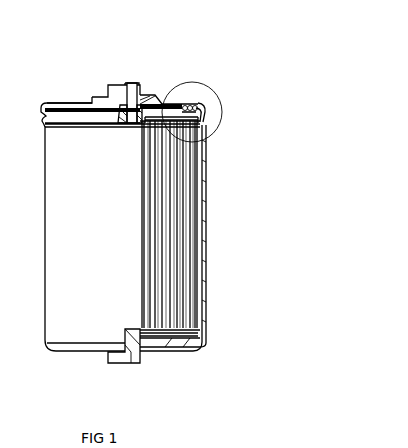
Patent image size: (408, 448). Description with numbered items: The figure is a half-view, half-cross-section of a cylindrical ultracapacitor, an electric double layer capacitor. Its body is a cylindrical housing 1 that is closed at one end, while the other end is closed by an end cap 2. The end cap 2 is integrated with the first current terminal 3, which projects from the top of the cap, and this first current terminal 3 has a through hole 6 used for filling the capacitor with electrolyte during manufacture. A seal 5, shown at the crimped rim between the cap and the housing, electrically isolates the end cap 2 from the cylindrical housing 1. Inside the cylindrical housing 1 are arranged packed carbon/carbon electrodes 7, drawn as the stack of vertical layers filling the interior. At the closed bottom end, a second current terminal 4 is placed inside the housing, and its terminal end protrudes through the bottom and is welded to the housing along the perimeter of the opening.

The cylindrical housing 1 is at (205, 280).
The end cap 2 is at (150, 102).
The first current terminal 3 is at (134, 88).
The second current terminal 4 is at (130, 352).
The seal 5 is at (188, 105).
The through hole 6 is at (120, 108).
The packed carbon/carbon electrodes 7 is at (188, 233).